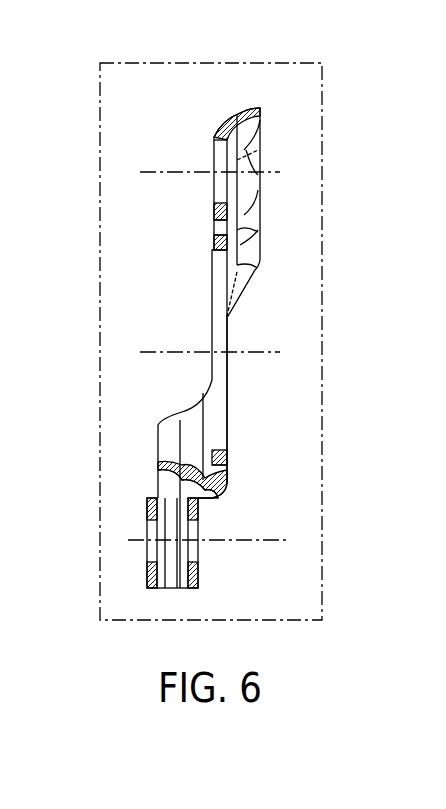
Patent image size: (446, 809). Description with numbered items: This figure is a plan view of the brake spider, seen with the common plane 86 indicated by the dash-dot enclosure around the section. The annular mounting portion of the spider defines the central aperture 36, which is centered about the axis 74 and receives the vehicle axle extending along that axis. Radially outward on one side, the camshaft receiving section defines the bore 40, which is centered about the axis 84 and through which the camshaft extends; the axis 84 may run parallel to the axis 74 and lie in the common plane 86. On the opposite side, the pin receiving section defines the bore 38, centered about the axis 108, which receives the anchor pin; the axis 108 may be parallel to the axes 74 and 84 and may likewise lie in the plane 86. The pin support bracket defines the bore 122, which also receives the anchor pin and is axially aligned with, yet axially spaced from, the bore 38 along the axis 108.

The common plane 86 is at (235, 63).
The axis 84 is at (155, 170).
The axis 74 is at (158, 351).
The axis 108 is at (272, 539).
The bore 40 is at (220, 192).
The central aperture 36 is at (215, 362).
The bore 122 is at (147, 548).
The bore 38 is at (193, 549).